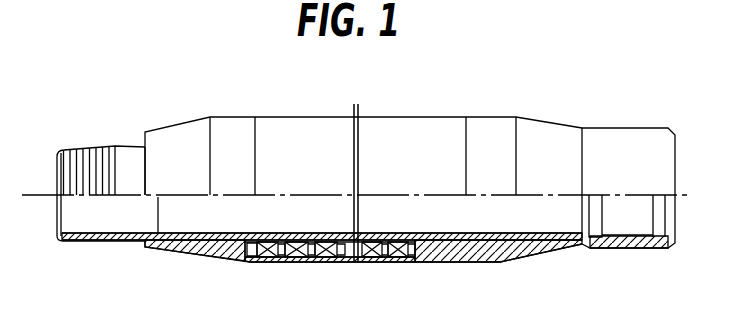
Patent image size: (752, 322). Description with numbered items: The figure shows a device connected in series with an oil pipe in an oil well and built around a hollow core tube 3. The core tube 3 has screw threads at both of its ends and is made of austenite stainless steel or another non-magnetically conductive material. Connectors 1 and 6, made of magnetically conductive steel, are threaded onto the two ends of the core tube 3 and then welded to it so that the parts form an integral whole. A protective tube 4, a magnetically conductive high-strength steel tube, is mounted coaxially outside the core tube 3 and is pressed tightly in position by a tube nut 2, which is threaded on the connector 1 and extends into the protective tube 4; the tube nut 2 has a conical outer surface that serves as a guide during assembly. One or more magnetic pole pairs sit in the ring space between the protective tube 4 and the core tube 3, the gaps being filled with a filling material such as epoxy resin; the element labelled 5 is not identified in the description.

The connector 1 is at (105, 237).
The tube nut 2 is at (203, 262).
The core tube 3 is at (265, 261).
The protective tube 4 is at (357, 262).
The sealing layer 5 is at (417, 262).
The connector 6 is at (520, 258).